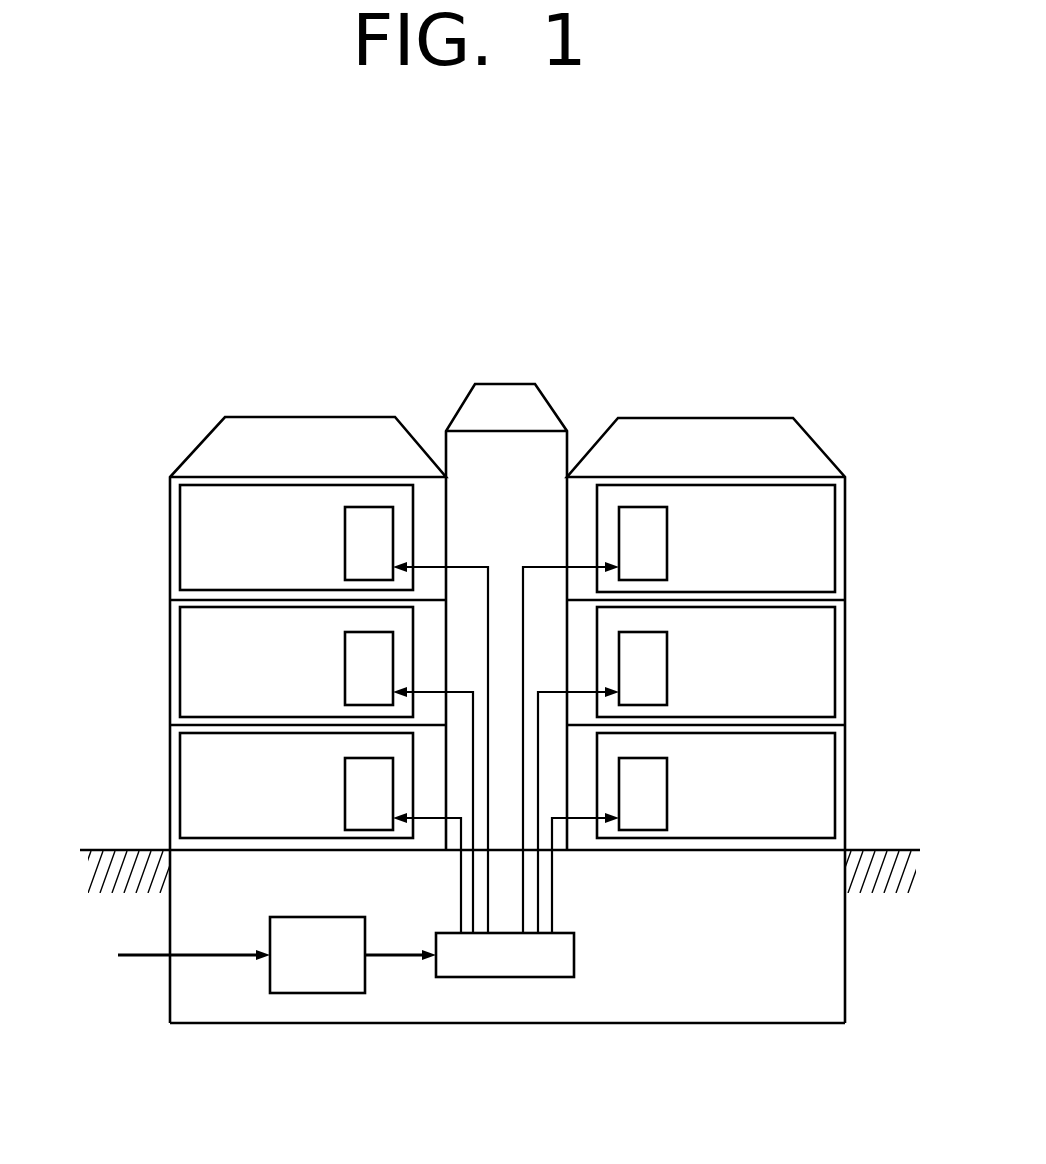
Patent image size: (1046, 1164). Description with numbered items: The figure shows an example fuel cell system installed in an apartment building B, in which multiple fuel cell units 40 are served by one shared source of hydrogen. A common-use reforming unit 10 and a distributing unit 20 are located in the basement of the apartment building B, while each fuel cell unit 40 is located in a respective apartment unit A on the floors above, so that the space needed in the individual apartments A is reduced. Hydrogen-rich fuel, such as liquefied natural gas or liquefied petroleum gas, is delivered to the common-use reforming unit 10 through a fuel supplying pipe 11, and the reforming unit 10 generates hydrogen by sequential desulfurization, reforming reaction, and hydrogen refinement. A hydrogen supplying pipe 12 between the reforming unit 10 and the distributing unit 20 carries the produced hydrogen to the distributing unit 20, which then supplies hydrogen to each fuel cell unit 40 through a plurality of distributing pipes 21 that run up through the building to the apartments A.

The apartment building B is at (824, 395).
The apartment unit A is at (768, 806).
The fuel cell unit 40 is at (661, 801).
The distributing pipe 21 is at (612, 1088).
The distributing unit 20 is at (509, 977).
The common-use reforming unit 10 is at (317, 993).
The fuel supplying pipe 11 is at (152, 955).
The hydrogen supplying pipe 12 is at (392, 955).